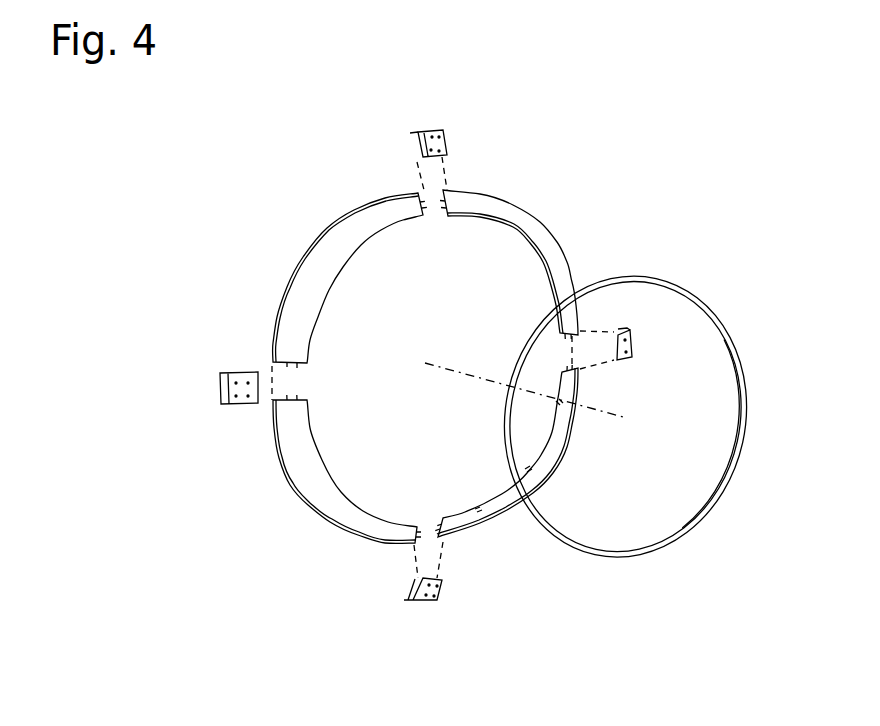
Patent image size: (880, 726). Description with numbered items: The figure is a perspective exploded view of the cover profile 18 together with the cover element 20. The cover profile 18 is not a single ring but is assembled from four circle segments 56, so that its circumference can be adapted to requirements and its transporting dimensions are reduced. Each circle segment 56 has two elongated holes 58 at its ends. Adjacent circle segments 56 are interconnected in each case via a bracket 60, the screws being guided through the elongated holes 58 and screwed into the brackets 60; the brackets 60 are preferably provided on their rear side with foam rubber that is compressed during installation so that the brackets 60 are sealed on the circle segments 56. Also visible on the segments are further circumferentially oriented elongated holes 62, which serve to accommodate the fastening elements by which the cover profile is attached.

The cover profile 18 is at (583, 151).
The cover element 20 is at (716, 322).
The circle segments 56 is at (345, 240).
The elongated holes 58 is at (285, 366).
The bracket 60 is at (433, 133).
The circumferentially oriented elongated holes 62 is at (557, 403).